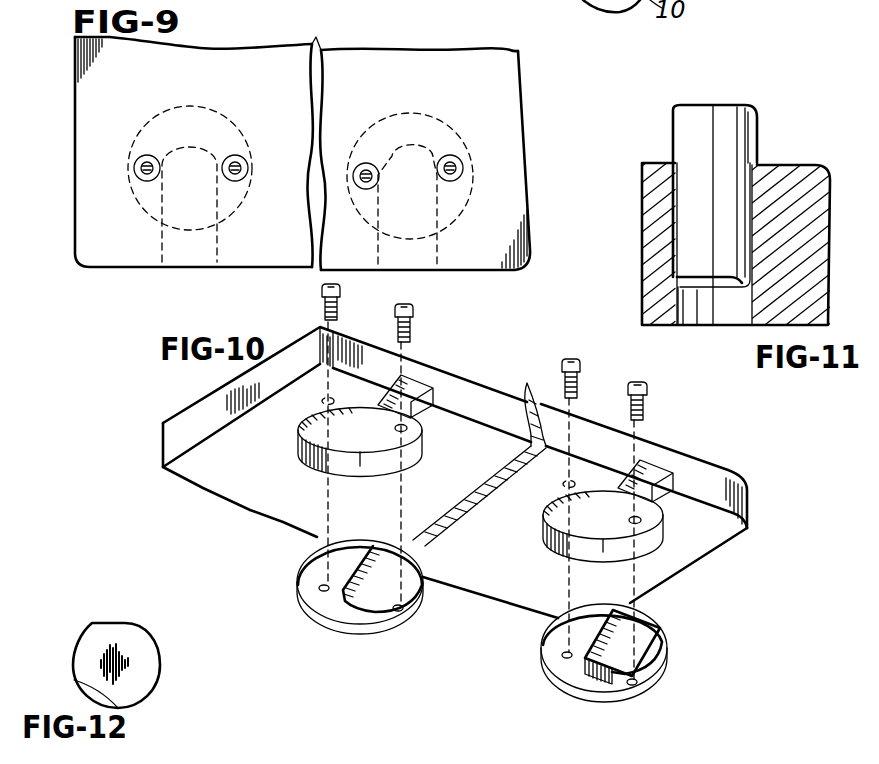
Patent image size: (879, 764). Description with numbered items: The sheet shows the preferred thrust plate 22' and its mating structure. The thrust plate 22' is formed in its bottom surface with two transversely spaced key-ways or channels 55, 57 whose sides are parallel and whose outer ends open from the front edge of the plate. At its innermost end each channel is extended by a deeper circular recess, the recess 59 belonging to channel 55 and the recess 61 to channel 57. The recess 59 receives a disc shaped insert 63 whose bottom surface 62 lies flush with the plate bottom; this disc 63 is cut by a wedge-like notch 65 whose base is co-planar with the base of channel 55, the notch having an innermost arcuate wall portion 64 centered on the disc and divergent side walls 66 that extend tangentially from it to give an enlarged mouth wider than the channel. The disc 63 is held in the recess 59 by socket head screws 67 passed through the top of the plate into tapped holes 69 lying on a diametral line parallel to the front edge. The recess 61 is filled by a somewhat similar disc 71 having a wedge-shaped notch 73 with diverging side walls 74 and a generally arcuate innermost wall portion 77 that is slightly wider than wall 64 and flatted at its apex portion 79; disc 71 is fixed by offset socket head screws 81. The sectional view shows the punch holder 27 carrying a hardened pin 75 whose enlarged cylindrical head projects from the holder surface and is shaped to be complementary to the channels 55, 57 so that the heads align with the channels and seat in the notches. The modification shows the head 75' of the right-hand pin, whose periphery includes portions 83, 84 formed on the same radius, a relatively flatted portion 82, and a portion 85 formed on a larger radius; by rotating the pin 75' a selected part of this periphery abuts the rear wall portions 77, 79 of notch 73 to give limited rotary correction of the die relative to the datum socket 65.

In FIG. 9, the thrust plate 22' is at (302, 140).
In FIG. 10, the thrust plate 22' is at (455, 501).
In FIG. 11, the punch holder 27 is at (644, 193).
In FIG. 9, the channel 55 is at (160, 242).
In FIG. 10, the channel 55 is at (417, 382).
In FIG. 9, the channel 57 is at (378, 247).
In FIG. 10, the channel 57 is at (655, 462).
In FIG. 9, the circular recess 59 is at (208, 105).
In FIG. 10, the circular recess 59 is at (333, 427).
In FIG. 9, the circular recess 61 is at (446, 122).
In FIG. 10, the circular recess 61 is at (597, 515).
In FIG. 10, the bottom surface of disc 62 is at (340, 630).
In FIG. 9, the disc shaped insert 63 is at (182, 104).
In FIG. 10, the disc shaped insert 63 is at (319, 600).
In FIG. 9, the arcuate wall portion 64 is at (176, 155).
In FIG. 10, the arcuate wall portion 64 is at (360, 612).
In FIG. 10, the wedge-like notch 65 is at (393, 575).
In FIG. 9, the side walls of notch 66 is at (220, 230).
In FIG. 10, the side walls of notch 66 is at (418, 598).
In FIG. 9, the socket head screws 67 is at (138, 158).
In FIG. 10, the socket head screws 67 is at (398, 311).
In FIG. 10, the tapped holes 69 is at (318, 587).
In FIG. 9, the disc 71 is at (396, 110).
In FIG. 10, the disc 71 is at (541, 640).
In FIG. 10, the wedge-shaped notch 73 is at (644, 622).
In FIG. 9, the side walls of notch 74 is at (455, 221).
In FIG. 10, the side walls of notch 74 is at (658, 654).
In FIG. 11, the hardened pin 75 is at (688, 215).
In FIG. 12, the modified pin head 75' is at (159, 701).
In FIG. 9, the innermost central wall portion 77 is at (372, 130).
In FIG. 10, the innermost central wall portion 77 is at (587, 662).
In FIG. 9, the flatted apex portion 79 is at (408, 152).
In FIG. 10, the flatted apex portion 79 is at (608, 675).
In FIG. 9, the socket head screws 81 is at (357, 166).
In FIG. 10, the socket head screws 81 is at (633, 382).
In FIG. 12, the flatted portion 82 is at (115, 622).
In FIG. 12, the peripheral portion 83 is at (73, 660).
In FIG. 12, the peripheral portion 84 is at (160, 664).
In FIG. 12, the larger-radius portion 85 is at (80, 687).